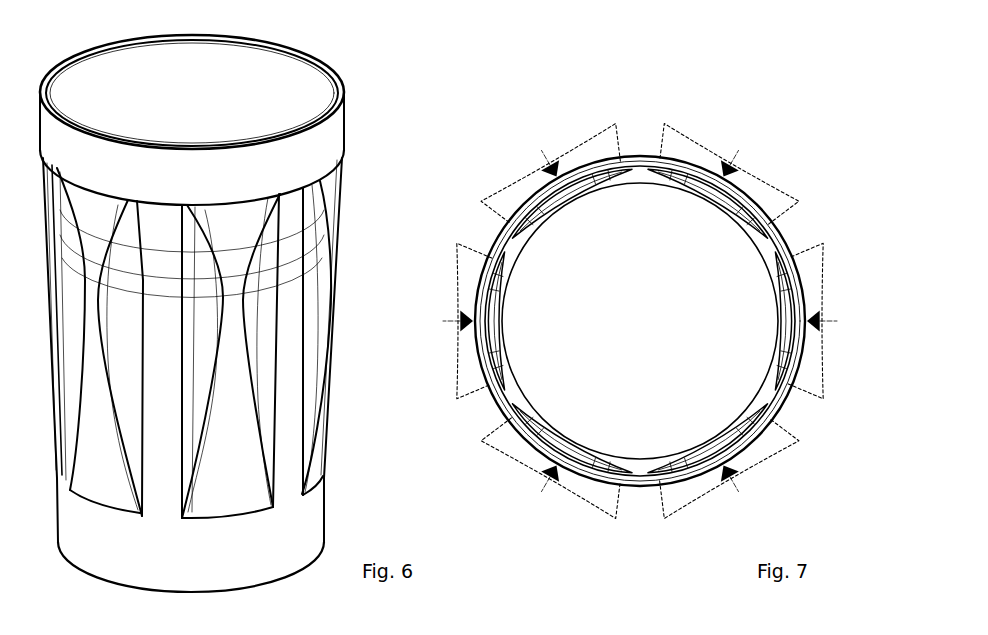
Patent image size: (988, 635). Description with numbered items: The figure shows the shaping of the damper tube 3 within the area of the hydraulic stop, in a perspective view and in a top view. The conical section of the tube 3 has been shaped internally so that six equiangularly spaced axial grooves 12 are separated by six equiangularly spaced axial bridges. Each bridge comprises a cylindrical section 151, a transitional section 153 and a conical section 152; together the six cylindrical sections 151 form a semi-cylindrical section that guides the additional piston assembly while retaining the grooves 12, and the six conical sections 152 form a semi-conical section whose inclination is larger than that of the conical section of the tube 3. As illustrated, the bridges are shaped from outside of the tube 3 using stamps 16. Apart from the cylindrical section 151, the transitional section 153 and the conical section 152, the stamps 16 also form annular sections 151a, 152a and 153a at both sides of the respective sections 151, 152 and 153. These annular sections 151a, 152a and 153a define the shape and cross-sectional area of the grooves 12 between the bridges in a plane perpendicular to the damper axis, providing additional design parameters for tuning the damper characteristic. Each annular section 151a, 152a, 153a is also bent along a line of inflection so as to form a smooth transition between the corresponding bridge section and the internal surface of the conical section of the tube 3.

In FIG. 6, the axial groove 12 is at (102, 453).
In FIG. 6, the cylindrical section 151 is at (288, 385).
In FIG. 6, the annular section 151a is at (318, 330).
In FIG. 6, the conical section 152 is at (298, 205).
In FIG. 7, the conical section 152 is at (713, 192).
In FIG. 6, the annular section 152a is at (327, 232).
In FIG. 7, the annular section 152a is at (742, 423).
In FIG. 6, the transitional section 153 is at (290, 277).
In FIG. 7, the transitional section 153 is at (568, 437).
In FIG. 6, the annular section 153a is at (243, 303).
In FIG. 7, the tube 3 is at (503, 240).
In FIG. 7, the stamp 16 is at (670, 140).